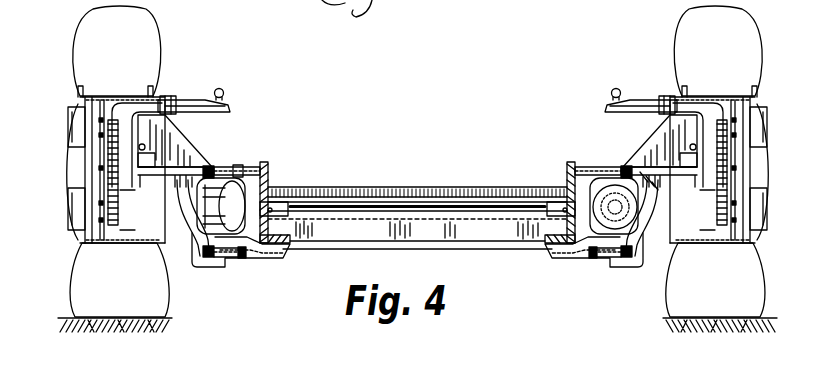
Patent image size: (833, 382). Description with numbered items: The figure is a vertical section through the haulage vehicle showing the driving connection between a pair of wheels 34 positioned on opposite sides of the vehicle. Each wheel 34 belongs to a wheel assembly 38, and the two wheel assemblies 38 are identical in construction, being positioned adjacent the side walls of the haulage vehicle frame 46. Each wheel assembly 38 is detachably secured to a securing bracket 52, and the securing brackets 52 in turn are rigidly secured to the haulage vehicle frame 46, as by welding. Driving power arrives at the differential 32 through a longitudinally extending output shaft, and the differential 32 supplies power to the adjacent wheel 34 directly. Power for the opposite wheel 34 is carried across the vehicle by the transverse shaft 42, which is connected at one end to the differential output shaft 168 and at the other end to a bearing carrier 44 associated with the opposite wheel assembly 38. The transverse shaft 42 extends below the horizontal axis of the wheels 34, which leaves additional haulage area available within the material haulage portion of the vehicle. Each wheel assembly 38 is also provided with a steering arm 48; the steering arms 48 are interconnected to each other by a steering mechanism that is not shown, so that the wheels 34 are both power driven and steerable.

The wheel 34 is at (160, 43).
The steering arm 48 is at (224, 88).
The wheel assembly 38 is at (203, 138).
The bearing carrier 44 is at (222, 200).
The haulage vehicle frame 46 is at (266, 172).
The transverse shaft 42 is at (350, 200).
The differential output shaft 168 is at (553, 200).
The differential 32 is at (590, 238).
The securing bracket 52 is at (248, 257).